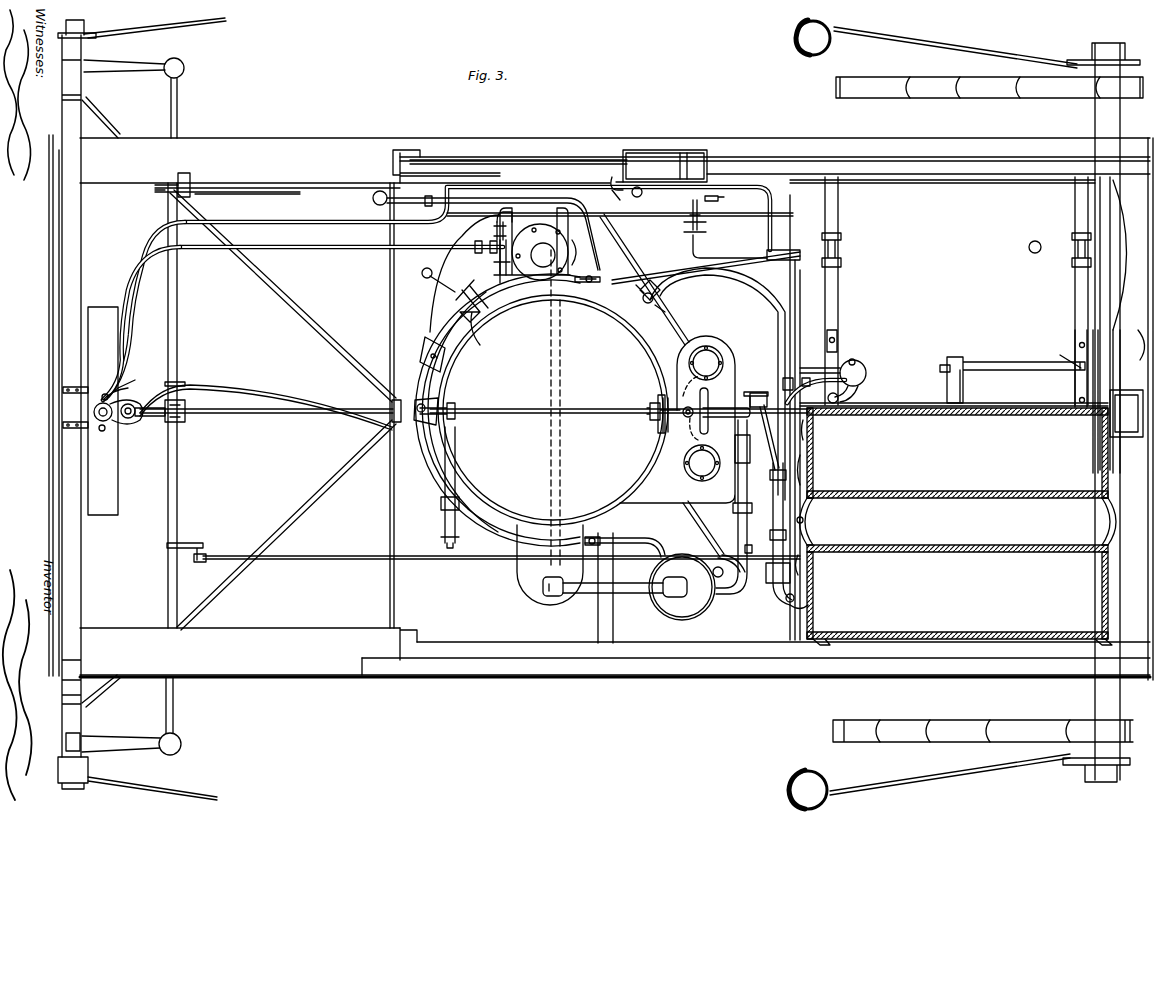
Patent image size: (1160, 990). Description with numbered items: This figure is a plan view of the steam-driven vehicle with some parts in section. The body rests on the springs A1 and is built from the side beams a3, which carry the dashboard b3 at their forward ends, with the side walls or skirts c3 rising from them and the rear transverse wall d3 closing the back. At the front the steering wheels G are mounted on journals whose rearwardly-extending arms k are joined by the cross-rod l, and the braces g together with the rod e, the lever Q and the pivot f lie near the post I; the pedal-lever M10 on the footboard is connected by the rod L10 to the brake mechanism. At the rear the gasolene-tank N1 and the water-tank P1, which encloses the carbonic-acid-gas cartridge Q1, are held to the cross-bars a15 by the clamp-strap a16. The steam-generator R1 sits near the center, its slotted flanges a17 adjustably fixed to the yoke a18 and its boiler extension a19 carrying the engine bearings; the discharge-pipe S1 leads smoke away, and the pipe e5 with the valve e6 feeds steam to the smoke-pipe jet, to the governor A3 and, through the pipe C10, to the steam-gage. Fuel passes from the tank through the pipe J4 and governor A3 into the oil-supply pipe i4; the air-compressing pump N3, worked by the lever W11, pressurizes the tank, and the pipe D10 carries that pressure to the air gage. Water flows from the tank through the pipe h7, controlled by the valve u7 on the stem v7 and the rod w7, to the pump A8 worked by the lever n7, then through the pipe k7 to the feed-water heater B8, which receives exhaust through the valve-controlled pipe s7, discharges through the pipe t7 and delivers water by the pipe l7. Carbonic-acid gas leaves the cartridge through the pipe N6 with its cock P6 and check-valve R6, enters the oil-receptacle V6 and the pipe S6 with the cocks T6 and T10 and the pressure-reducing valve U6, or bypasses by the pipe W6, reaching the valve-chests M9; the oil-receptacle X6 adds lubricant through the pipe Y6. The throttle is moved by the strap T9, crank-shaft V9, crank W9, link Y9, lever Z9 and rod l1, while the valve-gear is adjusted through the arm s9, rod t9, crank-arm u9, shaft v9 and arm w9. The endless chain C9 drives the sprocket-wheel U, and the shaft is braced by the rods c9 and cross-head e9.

The dashboard b3 is at (56, 265).
The side beams a3 is at (615, 407).
The shaft v9 is at (180, 470).
The lever W11 is at (403, 150).
The diagonal brace g is at (283, 410).
The rod L10 is at (263, 190).
The pedal-lever M10 is at (192, 182).
The front or steering wheels G is at (155, 34).
The rearwardly-extending arms k is at (121, 68).
The pipe D10 is at (272, 226).
The pipe C10 is at (218, 259).
The oil-receptacle X6 is at (372, 197).
The pipe J4 is at (668, 265).
The rod w7 is at (694, 227).
The air-compressing pump N3 is at (658, 152).
The valve e6 is at (500, 225).
The steam-generator R1 is at (553, 410).
The yoke a18 is at (586, 262).
The pipe e5 is at (560, 403).
The governor A3 is at (503, 270).
The slotted flanges a17 is at (596, 276).
The oil-supply pipe i4 is at (440, 302).
The link Y9 is at (428, 470).
The crank W9 is at (460, 415).
The crank-shaft V9 is at (648, 420).
The strap T9 is at (660, 432).
The cock T10 is at (690, 440).
The valve-chests M9 is at (702, 463).
The pressure-reducing valve U6 is at (738, 372).
The pipe h7 is at (744, 302).
The pipe Y6 is at (680, 300).
The pump A8 is at (650, 296).
The lever n7 is at (630, 257).
The boiler extension a19 is at (655, 316).
The discharge-pipe S1 is at (540, 604).
The pipe t7 is at (624, 594).
The feed-water heater B8 is at (682, 587).
The pipe l7 is at (638, 540).
The crank-arm u9 is at (190, 542).
The rod t9 is at (475, 559).
The pipe k7 is at (692, 532).
The valve-controlled pipe s7 is at (738, 528).
The arm s9 is at (752, 552).
The pipe W6 is at (771, 499).
The valve u7 is at (793, 610).
The cock T6 is at (795, 382).
The side walls or skirts c3 is at (956, 133).
The springs A1 is at (1012, 97).
The rear transverse wall d3 is at (1152, 330).
The clamp-strap a16 is at (838, 278).
The cross-bars a15 is at (838, 330).
The gasolene-tank N1 is at (1038, 254).
The pipe S6 is at (838, 338).
The oil-receptacle V6 is at (868, 375).
The cross-head e9 is at (945, 378).
The rods c9 is at (1012, 390).
The endless chain C9 is at (908, 406).
The water-tank P1 is at (957, 453).
The carbonic-acid-gas cartridge Q1 is at (958, 525).
The check-valve R6 is at (840, 420).
The pipe N6 is at (815, 470).
The cock P6 is at (808, 521).
The transverse shaft or stem v7 is at (815, 567).
The sprocket-wheel U is at (1128, 437).
The rod l1 is at (85, 410).
The cross-rod l is at (178, 337).
The post I is at (107, 425).
The lever Q is at (136, 382).
The pivot f is at (128, 425).
The arm w9 is at (150, 421).
The rod e is at (240, 412).
The lever Z9 is at (266, 400).